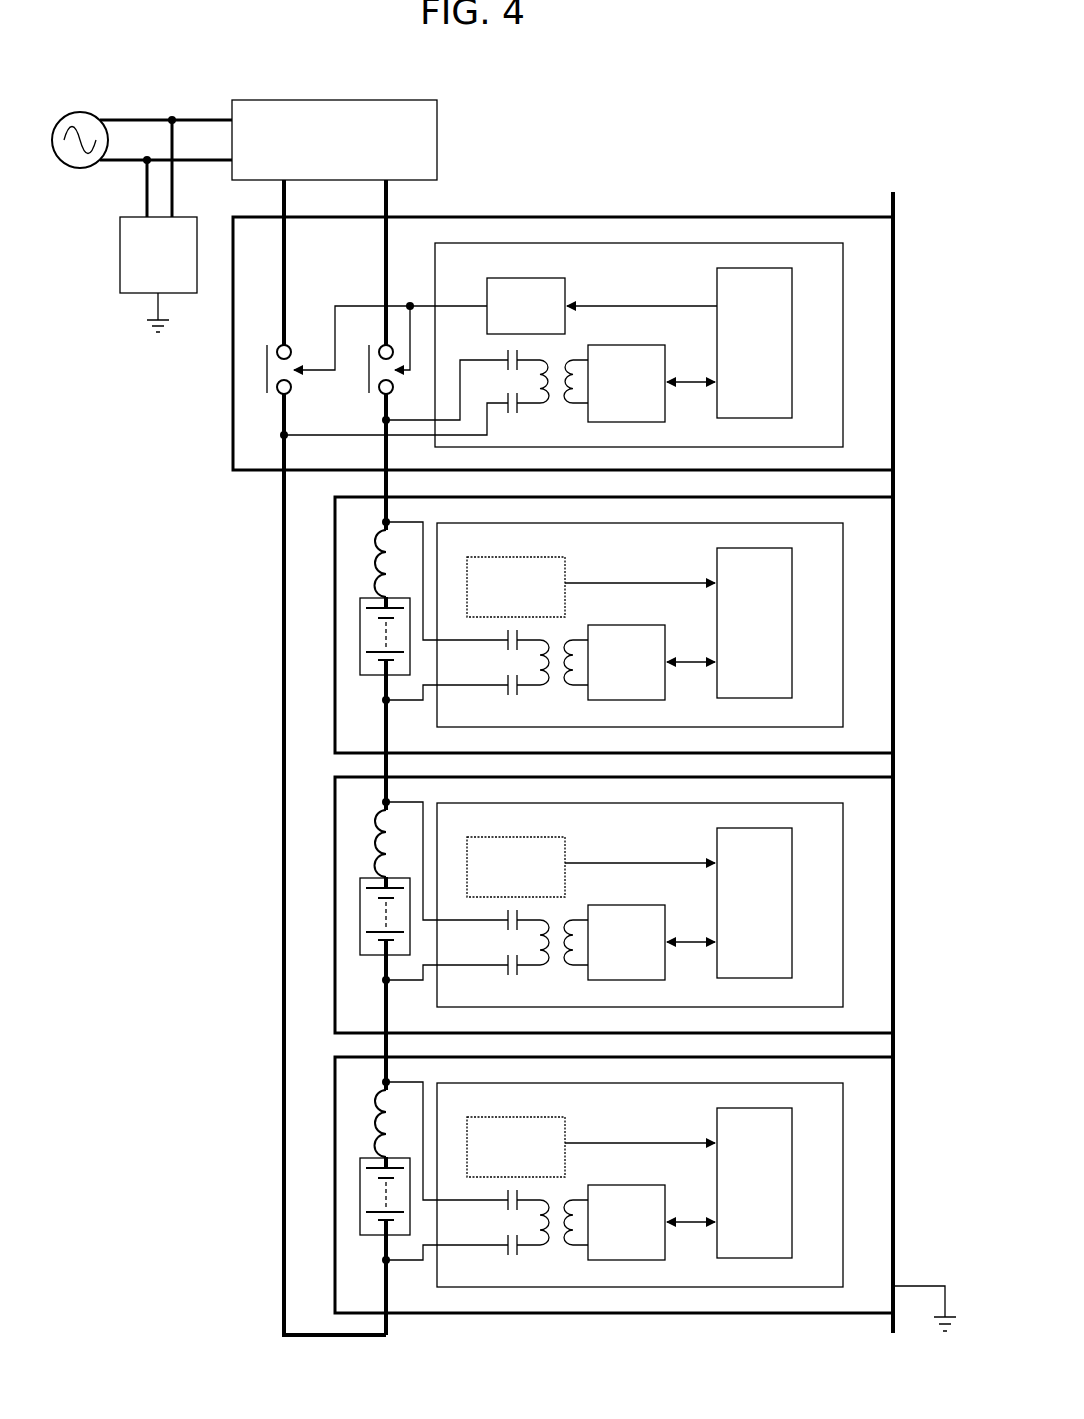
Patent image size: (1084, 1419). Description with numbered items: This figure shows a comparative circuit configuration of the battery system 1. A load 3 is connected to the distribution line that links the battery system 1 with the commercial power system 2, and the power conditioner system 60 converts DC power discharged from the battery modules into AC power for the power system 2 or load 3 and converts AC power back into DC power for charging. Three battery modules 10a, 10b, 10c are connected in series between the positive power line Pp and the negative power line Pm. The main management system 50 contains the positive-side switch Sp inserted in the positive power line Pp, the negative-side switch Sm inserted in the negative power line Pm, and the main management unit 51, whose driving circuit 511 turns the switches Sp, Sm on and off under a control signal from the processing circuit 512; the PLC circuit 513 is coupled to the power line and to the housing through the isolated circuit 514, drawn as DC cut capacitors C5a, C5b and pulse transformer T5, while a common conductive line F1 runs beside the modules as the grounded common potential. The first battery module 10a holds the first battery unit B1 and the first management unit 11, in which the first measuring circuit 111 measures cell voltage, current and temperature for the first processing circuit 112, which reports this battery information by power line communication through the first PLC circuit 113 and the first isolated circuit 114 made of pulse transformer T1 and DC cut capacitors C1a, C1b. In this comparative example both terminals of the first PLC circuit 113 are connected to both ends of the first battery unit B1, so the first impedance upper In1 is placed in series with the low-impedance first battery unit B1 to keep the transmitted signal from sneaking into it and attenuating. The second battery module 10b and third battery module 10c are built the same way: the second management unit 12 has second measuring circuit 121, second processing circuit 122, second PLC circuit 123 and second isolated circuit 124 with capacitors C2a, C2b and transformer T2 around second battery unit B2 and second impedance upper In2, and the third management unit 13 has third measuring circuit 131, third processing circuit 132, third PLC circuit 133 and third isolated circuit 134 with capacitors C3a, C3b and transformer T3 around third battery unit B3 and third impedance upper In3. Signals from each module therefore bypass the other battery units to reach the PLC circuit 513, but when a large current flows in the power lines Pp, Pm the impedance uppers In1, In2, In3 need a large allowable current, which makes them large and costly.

The battery system 1 is at (604, 761).
The commercial power system 2 is at (78, 172).
The load 3 is at (186, 217).
The power conditioner system 60 is at (437, 135).
The main management system 50 is at (813, 214).
The main management unit 51 is at (842, 264).
The driving circuit 511 is at (566, 279).
The processing circuit 512 is at (792, 281).
The PLC circuit 513 is at (665, 359).
The isolated circuit 514 is at (442, 376).
The first battery module 10a is at (334, 541).
The second battery module 10b is at (592, 905).
The third battery module 10c is at (592, 1185).
The first management unit 11 is at (843, 545).
The second management unit 12 is at (654, 895).
The third management unit 13 is at (654, 1175).
The first measuring circuit 111 is at (566, 559).
The first processing circuit 112 is at (792, 561).
The first PLC circuit 113 is at (665, 639).
The first isolated circuit 114 is at (495, 620).
The second measuring circuit 121 is at (591, 852).
The second processing circuit 122 is at (774, 892).
The second PLC circuit 123 is at (651, 933).
The second isolated circuit 124 is at (495, 900).
The third measuring circuit 131 is at (591, 1132).
The third processing circuit 132 is at (774, 1172).
The third PLC circuit 133 is at (651, 1213).
The third isolated circuit 134 is at (495, 1180).
The common conductive line F1 is at (893, 198).
The negative power line Pm is at (286, 211).
The positive power line Pp is at (388, 211).
The negative-side switch Sm is at (295, 371).
The positive-side switch Sp is at (395, 371).
The DC cut capacitor C5a is at (461, 387).
The DC cut capacitor C5b is at (410, 416).
The pulse transformer T5 is at (564, 395).
The first battery unit B1 is at (369, 598).
The second battery unit B2 is at (373, 901).
The third battery unit B3 is at (373, 1181).
The first impedance upper In1 is at (396, 563).
The second impedance upper In2 is at (396, 843).
The third impedance upper In3 is at (396, 1123).
The DC cut capacitor C1a is at (463, 598).
The DC cut capacitor C1b is at (463, 696).
The pulse transformer T1 is at (564, 673).
The DC cut capacitor C2a is at (463, 878).
The DC cut capacitor C2b is at (463, 976).
The pulse transformer T2 is at (564, 953).
The DC cut capacitor C3a is at (463, 1158).
The DC cut capacitor C3b is at (463, 1256).
The pulse transformer T3 is at (564, 1233).